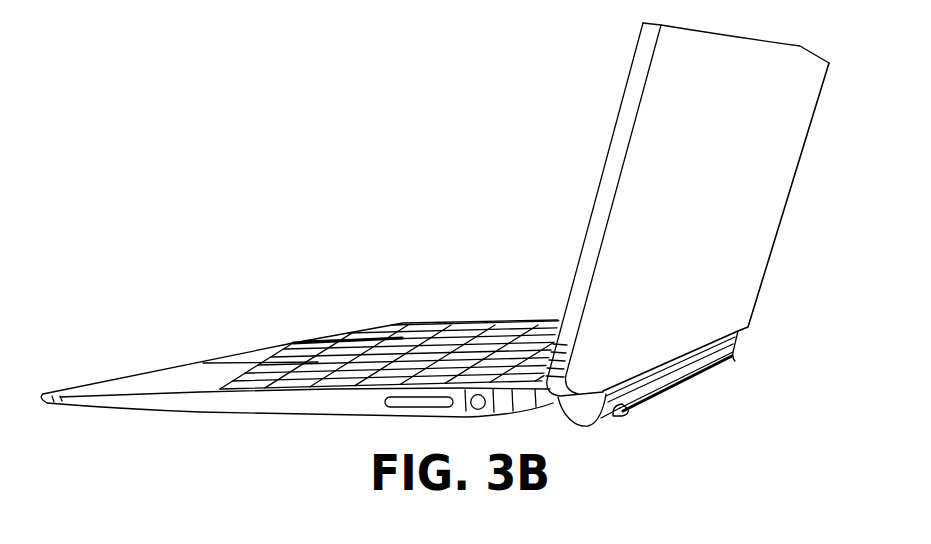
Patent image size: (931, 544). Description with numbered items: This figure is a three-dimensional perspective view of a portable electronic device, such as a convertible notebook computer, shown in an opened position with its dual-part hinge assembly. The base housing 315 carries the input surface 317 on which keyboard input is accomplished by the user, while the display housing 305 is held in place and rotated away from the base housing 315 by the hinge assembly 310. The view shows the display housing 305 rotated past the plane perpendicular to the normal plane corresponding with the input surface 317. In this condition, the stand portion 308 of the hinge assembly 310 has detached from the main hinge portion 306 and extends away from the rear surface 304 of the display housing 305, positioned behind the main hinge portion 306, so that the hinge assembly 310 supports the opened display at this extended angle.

The rear surface 304 is at (687, 209).
The display housing 305 is at (755, 274).
The main hinge portion 306 is at (621, 414).
The stand portion 308 is at (586, 411).
The hinge assembly 310 is at (742, 350).
The base housing 315 is at (104, 408).
The input surface 317 is at (457, 321).